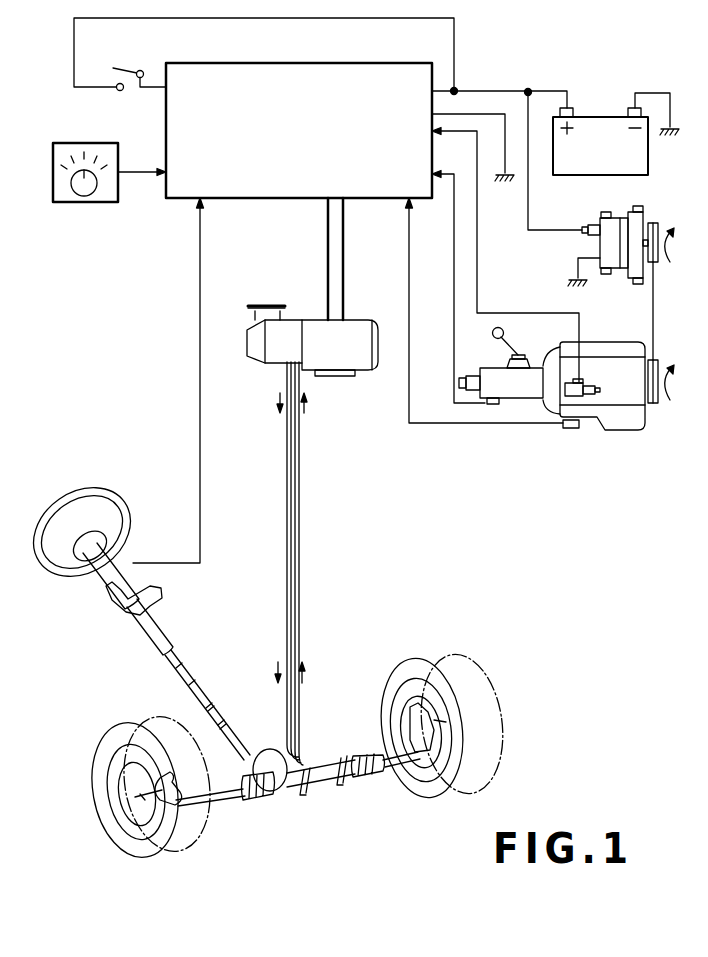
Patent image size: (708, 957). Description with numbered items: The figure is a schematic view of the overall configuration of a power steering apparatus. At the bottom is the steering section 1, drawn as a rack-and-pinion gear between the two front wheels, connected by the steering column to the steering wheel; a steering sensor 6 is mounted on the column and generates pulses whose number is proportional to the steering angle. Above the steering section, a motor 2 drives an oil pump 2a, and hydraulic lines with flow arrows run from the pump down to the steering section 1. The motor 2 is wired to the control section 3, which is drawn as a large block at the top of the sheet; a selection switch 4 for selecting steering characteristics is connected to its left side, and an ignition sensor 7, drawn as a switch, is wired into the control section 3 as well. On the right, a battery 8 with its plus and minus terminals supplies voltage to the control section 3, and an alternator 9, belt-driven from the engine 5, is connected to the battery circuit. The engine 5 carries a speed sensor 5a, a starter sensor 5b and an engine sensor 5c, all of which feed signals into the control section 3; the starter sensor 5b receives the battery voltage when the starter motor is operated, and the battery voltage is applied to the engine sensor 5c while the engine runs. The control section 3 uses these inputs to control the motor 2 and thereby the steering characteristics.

The steering section 1 is at (307, 811).
The motor 2 is at (340, 376).
The oil pump 2a is at (273, 363).
The control section 3 is at (258, 200).
The selection switch 4 is at (80, 205).
The engine 5 is at (625, 432).
The speed sensor 5a is at (491, 404).
The starter sensor 5b is at (576, 396).
The engine sensor 5c is at (575, 428).
The steering sensor 6 is at (128, 552).
The ignition sensor 7 is at (129, 88).
The battery 8 is at (612, 117).
The alternator 9 is at (628, 218).